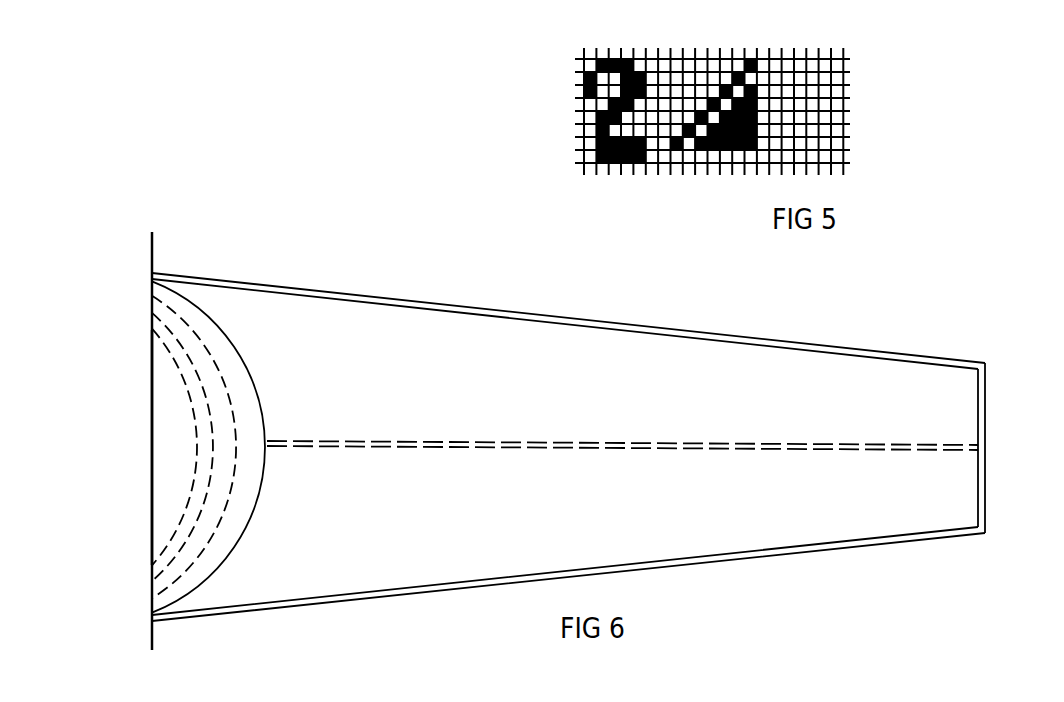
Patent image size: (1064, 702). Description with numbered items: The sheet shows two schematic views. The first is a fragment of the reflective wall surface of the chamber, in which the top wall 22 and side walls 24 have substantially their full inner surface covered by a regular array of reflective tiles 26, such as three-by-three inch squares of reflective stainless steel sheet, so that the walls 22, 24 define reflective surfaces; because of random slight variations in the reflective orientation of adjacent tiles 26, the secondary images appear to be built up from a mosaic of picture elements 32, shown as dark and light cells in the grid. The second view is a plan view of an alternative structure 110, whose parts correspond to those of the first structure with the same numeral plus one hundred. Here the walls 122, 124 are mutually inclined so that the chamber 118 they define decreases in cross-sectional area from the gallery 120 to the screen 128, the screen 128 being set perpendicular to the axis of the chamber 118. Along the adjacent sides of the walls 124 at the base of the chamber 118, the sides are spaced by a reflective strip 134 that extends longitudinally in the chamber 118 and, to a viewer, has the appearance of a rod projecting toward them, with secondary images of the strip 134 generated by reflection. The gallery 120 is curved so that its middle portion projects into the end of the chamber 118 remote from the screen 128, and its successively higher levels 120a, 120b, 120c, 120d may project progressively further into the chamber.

In FIG. 5, the top wall 22 is at (791, 94).
In FIG. 5, the side walls 24 is at (791, 94).
In FIG. 5, the reflective tiles 26 is at (802, 127).
In FIG. 5, the picture elements 32 is at (641, 79).
In FIG. 6, the structure 110 is at (554, 433).
In FIG. 6, the chamber 118 is at (401, 540).
In FIG. 6, the gallery 120 is at (202, 446).
In FIG. 6, the gallery level 120a is at (165, 413).
In FIG. 6, the gallery level 120b is at (198, 332).
In FIG. 6, the gallery level 120c is at (218, 375).
In FIG. 6, the gallery level 120d is at (246, 402).
In FIG. 6, the wall 122 is at (640, 397).
In FIG. 6, the walls 124 is at (524, 347).
In FIG. 6, the screen 128 is at (985, 400).
In FIG. 6, the reflective strip 134 is at (652, 450).